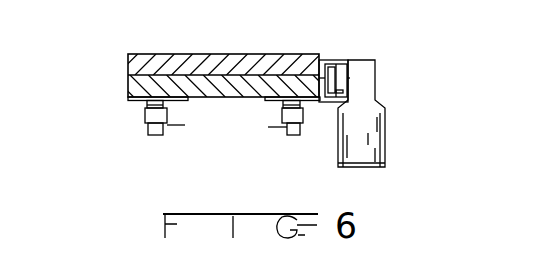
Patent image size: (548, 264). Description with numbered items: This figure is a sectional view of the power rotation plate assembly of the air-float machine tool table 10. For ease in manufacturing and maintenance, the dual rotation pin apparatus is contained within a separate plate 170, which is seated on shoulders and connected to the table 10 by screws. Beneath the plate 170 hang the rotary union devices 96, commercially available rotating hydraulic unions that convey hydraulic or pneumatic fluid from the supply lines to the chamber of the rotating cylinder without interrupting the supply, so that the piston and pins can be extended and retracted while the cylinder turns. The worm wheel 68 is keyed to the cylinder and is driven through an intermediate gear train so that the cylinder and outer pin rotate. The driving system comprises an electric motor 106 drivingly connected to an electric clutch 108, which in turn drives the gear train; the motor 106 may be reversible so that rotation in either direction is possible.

The air-float machine tool table 10 is at (202, 74).
The separate plate 170 is at (128, 65).
The worm wheel 68 is at (137, 101).
The rotary union device 96 is at (145, 115).
The electric clutch 108 is at (340, 65).
The electric motor 106 is at (375, 130).